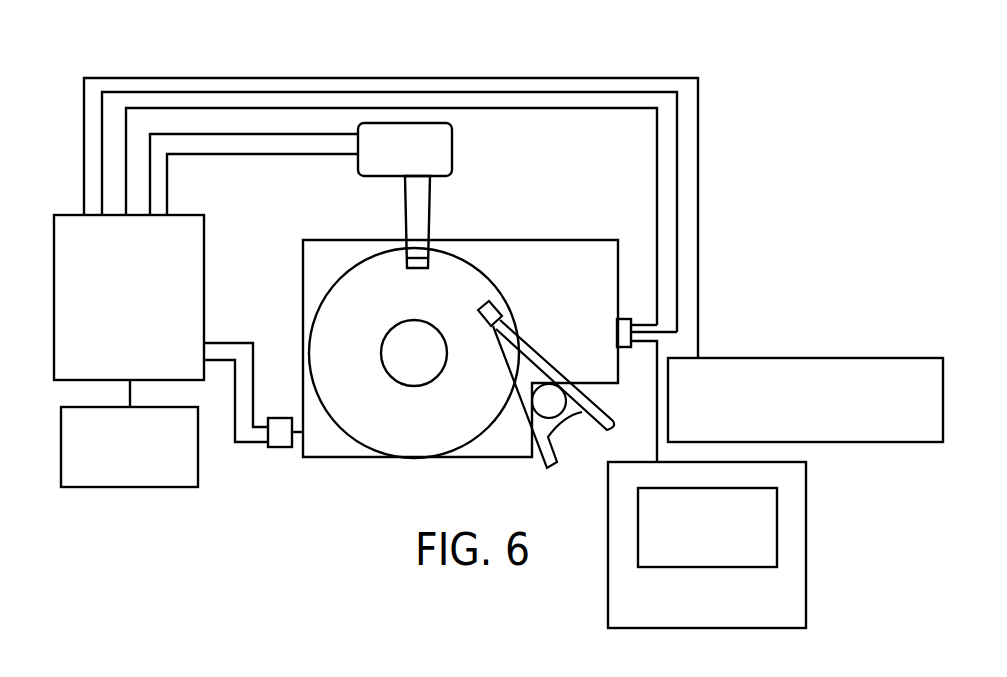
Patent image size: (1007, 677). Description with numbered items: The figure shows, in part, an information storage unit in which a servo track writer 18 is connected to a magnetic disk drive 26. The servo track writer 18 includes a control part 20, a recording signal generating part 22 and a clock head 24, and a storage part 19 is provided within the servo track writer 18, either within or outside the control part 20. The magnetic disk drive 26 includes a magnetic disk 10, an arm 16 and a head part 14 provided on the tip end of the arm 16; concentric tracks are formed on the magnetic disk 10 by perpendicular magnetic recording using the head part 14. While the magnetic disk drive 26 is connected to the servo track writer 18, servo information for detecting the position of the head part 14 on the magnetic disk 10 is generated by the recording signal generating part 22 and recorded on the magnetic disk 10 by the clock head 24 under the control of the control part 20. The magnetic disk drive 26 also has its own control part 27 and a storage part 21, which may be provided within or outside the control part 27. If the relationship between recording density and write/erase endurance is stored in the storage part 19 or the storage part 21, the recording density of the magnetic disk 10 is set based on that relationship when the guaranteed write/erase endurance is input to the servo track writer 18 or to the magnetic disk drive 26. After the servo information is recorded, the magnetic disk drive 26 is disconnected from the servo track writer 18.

The servo track writer 18 is at (547, 54).
The magnetic disk 10 is at (343, 280).
The head part 14 is at (500, 311).
The arm 16 is at (545, 360).
The clock head 24 is at (437, 211).
The magnetic disk drive 26 is at (622, 282).
The control part 20 is at (206, 255).
The storage part 19 is at (177, 488).
The recording signal generating part 22 is at (805, 358).
The storage part 21 is at (777, 528).
The control part 27 is at (806, 555).